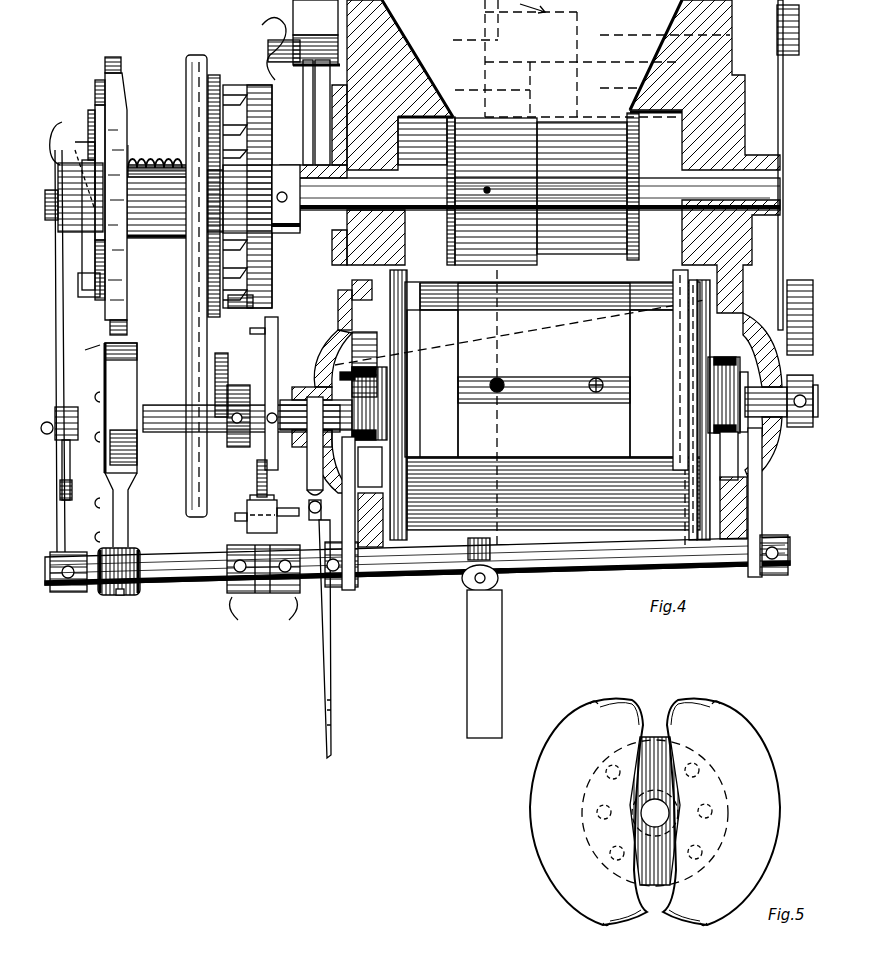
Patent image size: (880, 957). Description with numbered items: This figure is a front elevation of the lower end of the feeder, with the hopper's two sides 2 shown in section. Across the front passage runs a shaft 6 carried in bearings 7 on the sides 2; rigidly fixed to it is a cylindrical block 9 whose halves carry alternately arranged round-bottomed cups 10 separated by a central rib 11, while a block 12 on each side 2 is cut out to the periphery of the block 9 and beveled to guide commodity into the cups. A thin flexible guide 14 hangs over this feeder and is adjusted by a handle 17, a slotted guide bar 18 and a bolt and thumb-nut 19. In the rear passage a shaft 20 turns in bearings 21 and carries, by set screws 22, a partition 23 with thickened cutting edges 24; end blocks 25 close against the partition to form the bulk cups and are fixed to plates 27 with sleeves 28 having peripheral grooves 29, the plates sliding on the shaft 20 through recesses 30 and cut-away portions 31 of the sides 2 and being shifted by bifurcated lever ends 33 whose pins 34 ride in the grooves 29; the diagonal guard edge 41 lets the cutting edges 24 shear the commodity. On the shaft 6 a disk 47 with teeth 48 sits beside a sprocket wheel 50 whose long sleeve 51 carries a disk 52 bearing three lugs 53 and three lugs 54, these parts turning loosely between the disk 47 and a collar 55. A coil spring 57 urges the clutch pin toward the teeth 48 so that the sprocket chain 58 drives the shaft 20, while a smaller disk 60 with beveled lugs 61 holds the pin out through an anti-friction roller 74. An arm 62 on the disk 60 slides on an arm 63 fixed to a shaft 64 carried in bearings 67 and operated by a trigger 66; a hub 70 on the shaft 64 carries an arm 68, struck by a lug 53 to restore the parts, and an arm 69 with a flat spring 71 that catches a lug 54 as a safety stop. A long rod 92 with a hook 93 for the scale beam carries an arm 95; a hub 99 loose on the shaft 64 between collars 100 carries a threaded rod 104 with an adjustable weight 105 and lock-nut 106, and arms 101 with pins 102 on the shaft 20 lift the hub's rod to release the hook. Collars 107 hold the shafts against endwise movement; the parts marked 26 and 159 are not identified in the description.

In FIG. 4, the sides 2 is at (405, 74).
In FIG. 4, the shaft 6 is at (775, 180).
In FIG. 4, the bearings 7 is at (325, 170).
In FIG. 4, the cylindrical block 9 is at (639, 220).
In FIG. 4, the round bottomed cups 10 is at (603, 236).
In FIG. 4, the central rib 11 is at (553, 260).
In FIG. 4, the block 12 is at (420, 90).
In FIG. 4, the partition or guide 14 is at (591, 58).
In FIG. 4, the handle 17 is at (303, 104).
In FIG. 4, the slotted guide bar 18 is at (315, 132).
In FIG. 4, the bolt and thumb-nut 19 is at (268, 26).
In FIG. 4, the shaft 20 is at (178, 404).
In FIG. 4, the bearings 21 is at (312, 382).
In FIG. 4, the set screws 22 is at (505, 385).
In FIG. 4, the partition 23 is at (552, 369).
In FIG. 4, the cutting edges 24 is at (585, 458).
In FIG. 4, the end blocks 25 is at (462, 413).
In FIG. 5, the end blocks 25 is at (526, 806).
In FIG. 5, the segment edge 26 is at (674, 697).
In FIG. 4, the plates 27 is at (400, 390).
In FIG. 5, the plates 27 is at (655, 888).
In FIG. 4, the sleeve 28 is at (720, 384).
In FIG. 4, the peripheral groove 29 is at (385, 410).
In FIG. 4, the recess 30 is at (705, 265).
In FIG. 4, the cut away portion 31 is at (745, 298).
In FIG. 4, the bifurcated ends 33 is at (537, 425).
In FIG. 4, the pins 34 is at (390, 435).
In FIG. 4, the diagonally disposed upper edge 41 is at (558, 342).
In FIG. 4, the disk 47 is at (272, 258).
In FIG. 4, the teeth 48 is at (272, 272).
In FIG. 4, the sprocket wheel 50 is at (216, 75).
In FIG. 4, the long sleeve 51 is at (162, 213).
In FIG. 4, the disk 52 is at (127, 128).
In FIG. 4, the radially extending lugs 53 is at (112, 57).
In FIG. 4, the lugs 54 is at (95, 96).
In FIG. 4, the collar 55 is at (157, 144).
In FIG. 4, the coil spring 57 is at (157, 156).
In FIG. 4, the sprocket chain 58 is at (188, 345).
In FIG. 4, the smaller disk 60 is at (88, 126).
In FIG. 4, the beveled lugs 61 is at (75, 148).
In FIG. 4, the arm 62 is at (66, 392).
In FIG. 4, the arm 63 is at (66, 506).
In FIG. 4, the shaft 64 is at (165, 585).
In FIG. 4, the trigger 66 is at (502, 644).
In FIG. 4, the bearings 67 is at (355, 590).
In FIG. 4, the arm 68 is at (137, 358).
In FIG. 4, the arm 69 is at (106, 487).
In FIG. 4, the hub 70 is at (142, 548).
In FIG. 4, the flat spring 71 is at (89, 345).
In FIG. 4, the anti-friction roller 74 is at (66, 158).
In FIG. 4, the long rod 92 is at (322, 488).
In FIG. 4, the hook 93 is at (331, 724).
In FIG. 4, the arm 95 is at (240, 520).
In FIG. 4, the hub 99 is at (263, 579).
In FIG. 4, the collars 100 is at (264, 622).
In FIG. 4, the arms 101 is at (265, 358).
In FIG. 4, the pin 102 is at (250, 332).
In FIG. 4, the threaded rod 104 is at (255, 478).
In FIG. 4, the weight 105 is at (278, 520).
In FIG. 4, the lock-nut 106 is at (250, 497).
In FIG. 4, the collars 107 is at (348, 595).
In FIG. 4, the pinion 159 is at (242, 427).